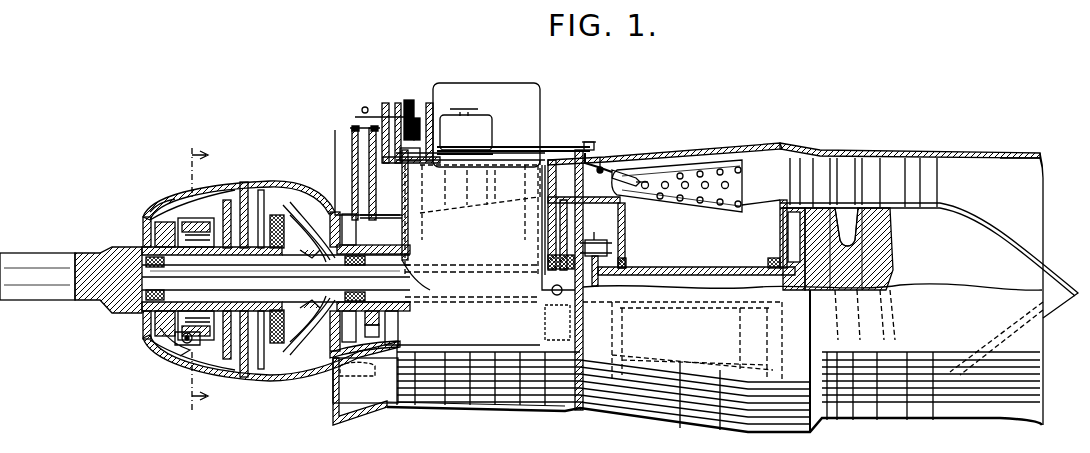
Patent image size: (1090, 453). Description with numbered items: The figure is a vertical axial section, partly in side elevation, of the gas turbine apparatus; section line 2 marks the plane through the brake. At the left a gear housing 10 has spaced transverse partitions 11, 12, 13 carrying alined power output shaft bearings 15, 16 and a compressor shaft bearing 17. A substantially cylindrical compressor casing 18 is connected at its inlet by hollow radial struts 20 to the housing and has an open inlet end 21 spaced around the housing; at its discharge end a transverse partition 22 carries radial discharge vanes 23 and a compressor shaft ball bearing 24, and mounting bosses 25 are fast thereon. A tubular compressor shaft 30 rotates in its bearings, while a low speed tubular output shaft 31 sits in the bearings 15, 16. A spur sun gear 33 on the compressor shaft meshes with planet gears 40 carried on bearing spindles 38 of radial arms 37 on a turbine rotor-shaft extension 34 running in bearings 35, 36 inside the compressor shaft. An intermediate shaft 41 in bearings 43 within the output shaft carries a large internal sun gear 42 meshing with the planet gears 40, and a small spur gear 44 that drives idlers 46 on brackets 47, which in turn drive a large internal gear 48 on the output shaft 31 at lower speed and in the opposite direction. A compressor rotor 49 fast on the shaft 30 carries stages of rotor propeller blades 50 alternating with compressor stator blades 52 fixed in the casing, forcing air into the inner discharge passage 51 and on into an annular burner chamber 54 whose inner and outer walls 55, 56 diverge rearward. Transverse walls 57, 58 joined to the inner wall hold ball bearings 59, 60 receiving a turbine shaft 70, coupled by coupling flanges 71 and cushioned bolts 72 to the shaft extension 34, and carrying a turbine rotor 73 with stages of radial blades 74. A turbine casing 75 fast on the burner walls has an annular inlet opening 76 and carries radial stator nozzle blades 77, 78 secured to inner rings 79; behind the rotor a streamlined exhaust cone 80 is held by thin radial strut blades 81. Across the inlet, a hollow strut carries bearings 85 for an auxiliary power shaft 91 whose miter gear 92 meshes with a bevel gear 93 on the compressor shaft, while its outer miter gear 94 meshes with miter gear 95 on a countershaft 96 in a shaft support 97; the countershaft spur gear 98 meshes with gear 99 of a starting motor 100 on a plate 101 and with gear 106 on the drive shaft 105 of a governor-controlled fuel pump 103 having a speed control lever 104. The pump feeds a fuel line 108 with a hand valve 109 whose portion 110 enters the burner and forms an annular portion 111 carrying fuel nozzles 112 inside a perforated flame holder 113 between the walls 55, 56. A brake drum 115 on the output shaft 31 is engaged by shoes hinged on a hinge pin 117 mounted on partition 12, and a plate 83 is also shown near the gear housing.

The section line 2- 2 is at (193, 278).
The gear housing 10 is at (190, 205).
The transverse partition 11 is at (146, 218).
The transverse partition 12 is at (236, 186).
The transverse partition 13 is at (353, 278).
The power output shaft bearing 15 is at (156, 232).
The power output shaft bearing 16 is at (205, 256).
The compressor shaft bearing 17 is at (352, 258).
The compressor casing 18 is at (468, 408).
The hollow radial strut 20 is at (365, 380).
The open inlet end 21 is at (332, 418).
The transverse partition 22 is at (568, 216).
The radial discharge vane 23 is at (528, 204).
The compressor shaft ball bearing 24 is at (548, 256).
The mounting boss 25 is at (572, 414).
The tubular compressor shaft 30 is at (395, 312).
The low speed tubular output shaft 31 is at (50, 254).
The spur sun gear 33 is at (368, 324).
The turbine rotor-shaft extension 34 is at (410, 262).
The bearing 35 is at (345, 302).
The bearing 36 is at (548, 270).
The radial arm 37 is at (282, 352).
The bearing spindle 38 is at (368, 336).
The planet gear 40 is at (336, 352).
The intermediate shaft 41 is at (150, 300).
The internal sun gear 42 is at (320, 360).
The bearing 43 is at (148, 258).
The spur gear 44 is at (270, 256).
The idler 46 is at (246, 348).
The bracket 47 is at (300, 340).
The internal gear 48 is at (262, 205).
The compressor rotor 49 is at (498, 405).
The rotor propeller blade 50 is at (400, 408).
The inner discharge passage 51 is at (540, 160).
The compressor stator blade 52 is at (492, 203).
The annular burner chamber 54 is at (700, 150).
The inner wall 55 is at (690, 210).
The outer wall 56 is at (742, 148).
The transverse wall 57 is at (626, 228).
The transverse wall 58 is at (780, 228).
The ball bearing 59 is at (628, 264).
The ball bearing 60 is at (770, 260).
The turbine shaft 70 is at (722, 267).
The coupling flange 71 is at (596, 240).
The cushioned bolt 72 is at (586, 248).
The turbine rotor 73 is at (888, 242).
The radial blade 74 is at (888, 160).
The turbine casing 75 is at (982, 153).
The annular inlet opening 76 is at (788, 158).
The radial stator nozzle blade 77 is at (814, 158).
The radial stator nozzle blade 78 is at (858, 160).
The inner ring 79 is at (780, 250).
The exhaust cone 80 is at (990, 230).
The strut blade 81 is at (930, 160).
The plate 83 is at (381, 214).
The bearing 85 is at (350, 130).
The auxiliary power shaft 91 is at (352, 160).
The miter gear 92 is at (407, 222).
The bevel gear 93 is at (407, 238).
The miter gear 94 is at (355, 118).
The miter gear 95 is at (366, 107).
The countershaft 96 is at (398, 103).
The shaft support 97 is at (385, 103).
The spur gear 98 is at (410, 100).
The gear 99 is at (417, 118).
The starting motor 100 is at (494, 86).
The plate 101 is at (430, 103).
The governor-controlled fuel pump 103 is at (494, 128).
The speed control lever 104 is at (480, 110).
The drive shaft 105 is at (470, 146).
The gear 106 is at (415, 149).
The fuel line 108 is at (554, 146).
The hand valve 109 is at (590, 142).
The fuel line portion 110 is at (605, 165).
The annular portion 111 is at (602, 176).
The fuel nozzle 112 is at (640, 176).
The flame holder 113 is at (742, 172).
The brake drum 115 is at (148, 342).
The hinge pin 117 is at (158, 209).